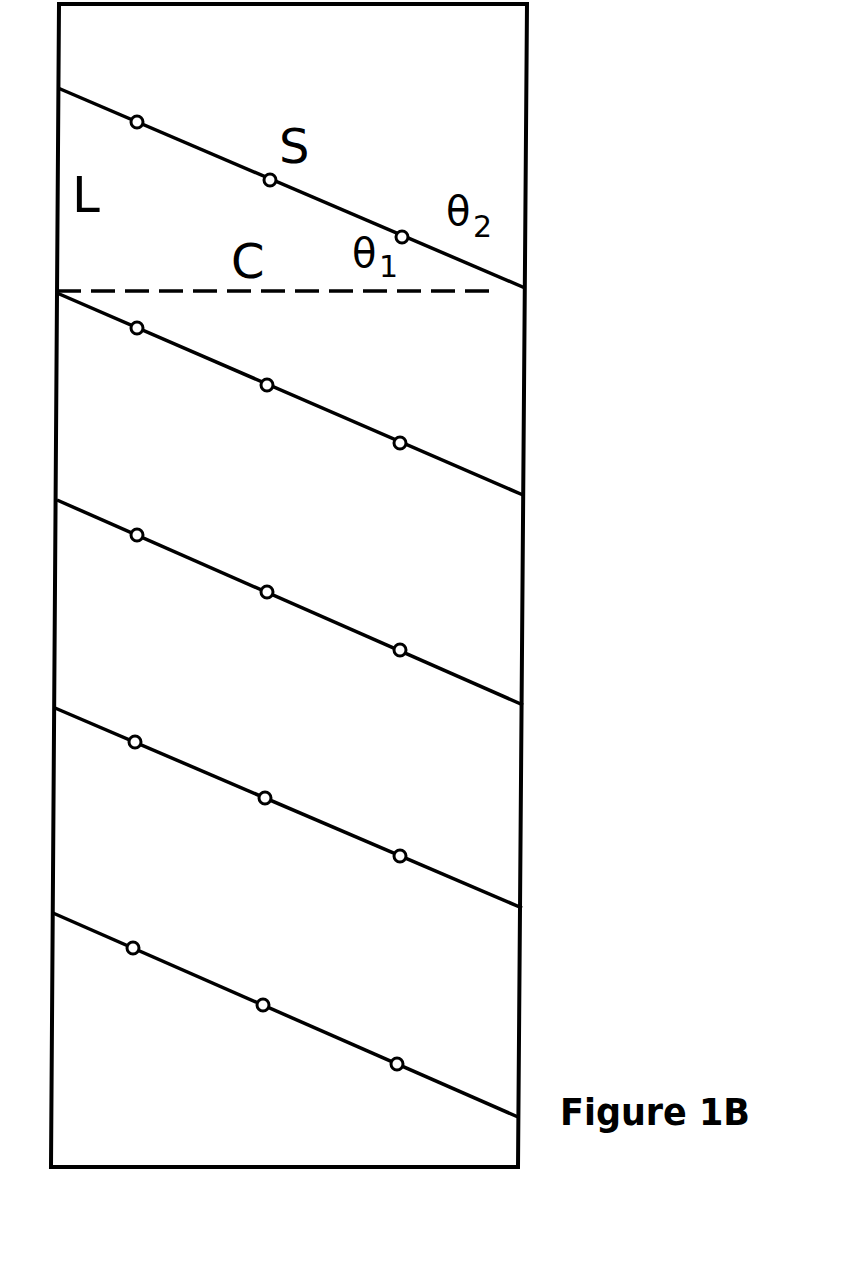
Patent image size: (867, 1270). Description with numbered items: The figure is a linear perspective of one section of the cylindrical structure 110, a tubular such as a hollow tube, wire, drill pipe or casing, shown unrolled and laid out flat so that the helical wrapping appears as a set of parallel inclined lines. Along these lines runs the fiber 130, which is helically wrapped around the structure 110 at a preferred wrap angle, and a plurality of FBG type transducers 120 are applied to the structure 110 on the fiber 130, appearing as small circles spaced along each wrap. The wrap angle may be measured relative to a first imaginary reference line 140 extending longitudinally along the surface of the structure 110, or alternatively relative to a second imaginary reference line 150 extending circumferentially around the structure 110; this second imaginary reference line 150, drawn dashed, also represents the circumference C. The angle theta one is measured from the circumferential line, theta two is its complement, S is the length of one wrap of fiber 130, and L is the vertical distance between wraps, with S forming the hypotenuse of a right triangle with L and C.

The cylindrical structure 110 is at (498, 397).
The FBG type transducers 120 is at (404, 645).
The fiber 130 is at (468, 678).
The first imaginary reference line 140 is at (527, 130).
The second imaginary reference line 150 is at (473, 290).